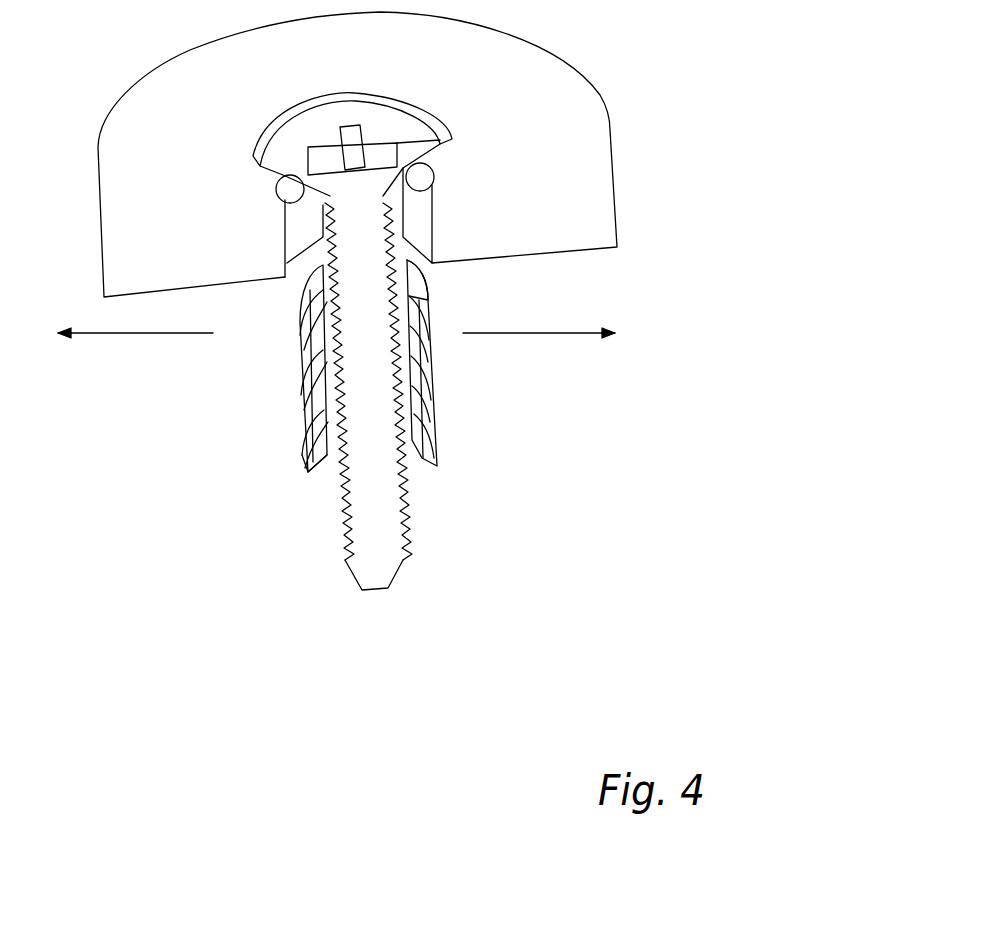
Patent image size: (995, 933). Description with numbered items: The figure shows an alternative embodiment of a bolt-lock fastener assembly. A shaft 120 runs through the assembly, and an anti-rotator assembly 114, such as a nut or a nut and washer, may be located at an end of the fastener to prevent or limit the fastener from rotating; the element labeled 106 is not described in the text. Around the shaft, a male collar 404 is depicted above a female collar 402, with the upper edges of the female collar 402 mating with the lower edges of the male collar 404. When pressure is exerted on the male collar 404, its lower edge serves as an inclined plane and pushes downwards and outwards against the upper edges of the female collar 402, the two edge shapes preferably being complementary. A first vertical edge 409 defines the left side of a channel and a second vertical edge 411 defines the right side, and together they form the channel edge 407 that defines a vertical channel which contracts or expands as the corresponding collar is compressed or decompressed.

The housing 106 is at (658, 160).
The anti-rotator assembly 114 is at (472, 143).
The channel edge 407 is at (457, 530).
The shaft 120 is at (403, 602).
The female collar 402 is at (443, 357).
The first vertical edge 409 is at (445, 312).
The male collar 404 is at (282, 312).
The second vertical edge 411 is at (283, 457).